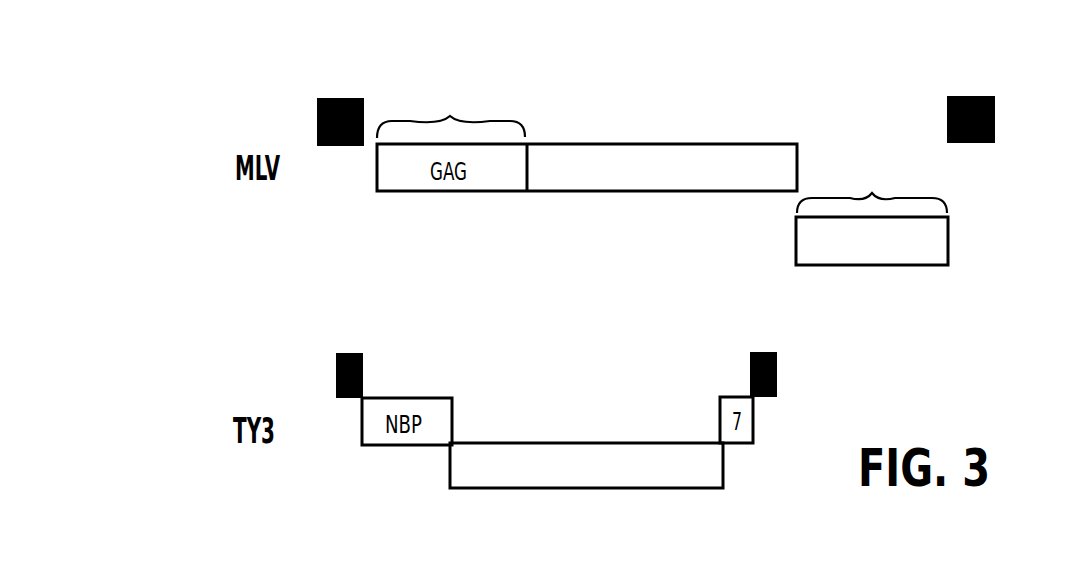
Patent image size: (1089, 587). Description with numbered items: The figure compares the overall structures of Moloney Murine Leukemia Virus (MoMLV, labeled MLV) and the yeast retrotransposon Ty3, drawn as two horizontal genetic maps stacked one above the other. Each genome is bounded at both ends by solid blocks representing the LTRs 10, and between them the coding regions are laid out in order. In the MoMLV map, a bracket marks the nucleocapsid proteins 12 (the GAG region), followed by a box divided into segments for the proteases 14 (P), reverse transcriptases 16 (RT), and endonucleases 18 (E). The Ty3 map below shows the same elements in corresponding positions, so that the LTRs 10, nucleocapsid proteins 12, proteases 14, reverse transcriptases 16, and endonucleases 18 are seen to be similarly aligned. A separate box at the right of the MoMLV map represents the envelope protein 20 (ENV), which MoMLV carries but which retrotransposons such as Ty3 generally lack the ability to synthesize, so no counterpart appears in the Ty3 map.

The LTR 10 is at (342, 98).
The nucleocapsid protein 12 is at (417, 118).
The protease 14 is at (547, 150).
The reverse transcriptase 16 is at (597, 150).
The endonuclease 18 is at (727, 150).
The envelope protein 20 is at (842, 195).